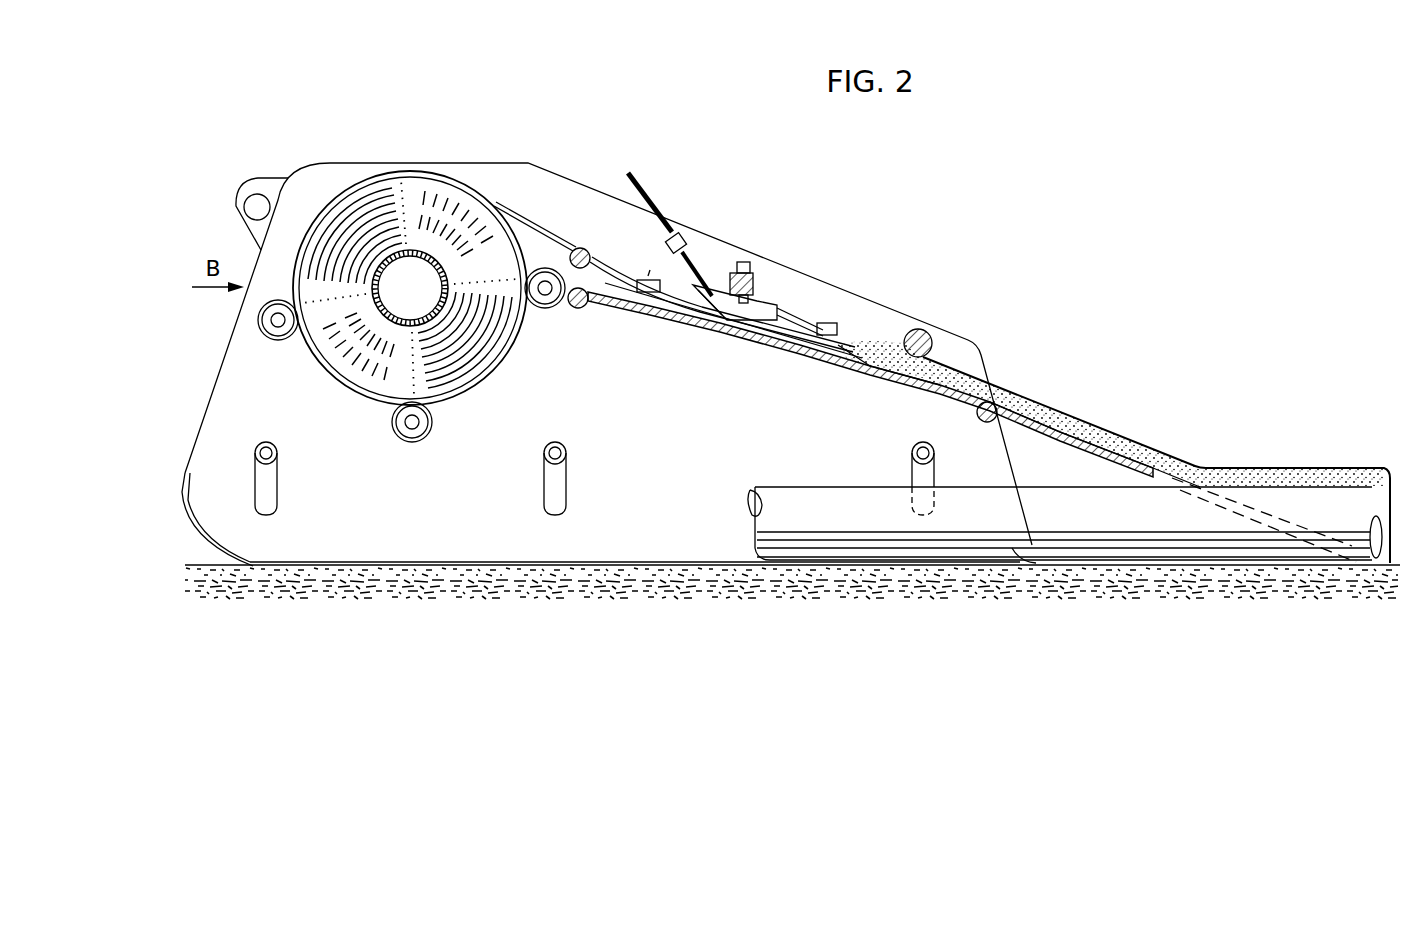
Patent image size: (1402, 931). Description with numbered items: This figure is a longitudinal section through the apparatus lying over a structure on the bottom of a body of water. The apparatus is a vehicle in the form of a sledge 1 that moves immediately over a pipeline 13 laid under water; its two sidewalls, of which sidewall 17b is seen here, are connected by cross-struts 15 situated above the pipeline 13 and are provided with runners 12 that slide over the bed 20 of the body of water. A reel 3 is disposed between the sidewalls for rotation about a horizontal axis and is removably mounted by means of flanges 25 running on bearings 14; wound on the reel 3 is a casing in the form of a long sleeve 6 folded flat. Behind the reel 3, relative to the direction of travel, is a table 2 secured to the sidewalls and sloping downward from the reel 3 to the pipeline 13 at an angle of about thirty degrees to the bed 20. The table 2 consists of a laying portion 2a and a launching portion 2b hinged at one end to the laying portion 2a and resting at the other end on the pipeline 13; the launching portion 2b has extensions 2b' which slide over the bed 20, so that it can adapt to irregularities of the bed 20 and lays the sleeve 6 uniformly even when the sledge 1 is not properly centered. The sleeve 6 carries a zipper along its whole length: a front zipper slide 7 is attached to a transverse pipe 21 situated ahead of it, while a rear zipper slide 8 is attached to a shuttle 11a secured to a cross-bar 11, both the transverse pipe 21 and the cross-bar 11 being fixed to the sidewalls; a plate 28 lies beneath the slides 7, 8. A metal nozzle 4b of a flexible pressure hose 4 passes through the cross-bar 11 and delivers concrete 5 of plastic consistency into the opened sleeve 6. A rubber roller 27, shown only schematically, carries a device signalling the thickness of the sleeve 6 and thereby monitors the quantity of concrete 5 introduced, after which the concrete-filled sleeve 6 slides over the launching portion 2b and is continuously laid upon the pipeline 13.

The sledge 1 is at (455, 548).
The table 2 is at (698, 338).
The laying portion 2a is at (850, 364).
The launching portion 2b is at (1071, 427).
The extensions 2b' is at (1264, 553).
The reel 3 is at (413, 252).
The flexible pressure hose 4 is at (656, 197).
The metal nozzle 4b is at (847, 352).
The concrete 5 is at (1020, 397).
The sleeve 6 is at (520, 230).
The front zipper slide 7 is at (653, 295).
The rear zipper slide 8 is at (832, 322).
The cross-bar 11 is at (734, 270).
The shuttle 11a is at (764, 306).
The runners 12 is at (607, 546).
The pipeline 13 is at (1298, 503).
The bearings 14 is at (277, 339).
The cross-struts 15 is at (280, 480).
The sidewall 17b is at (342, 534).
The bed 20 is at (699, 572).
The transverse pipe 21 is at (576, 248).
The flanges 25 is at (371, 178).
The rubber roller 27 is at (926, 336).
The plate 28 is at (790, 340).